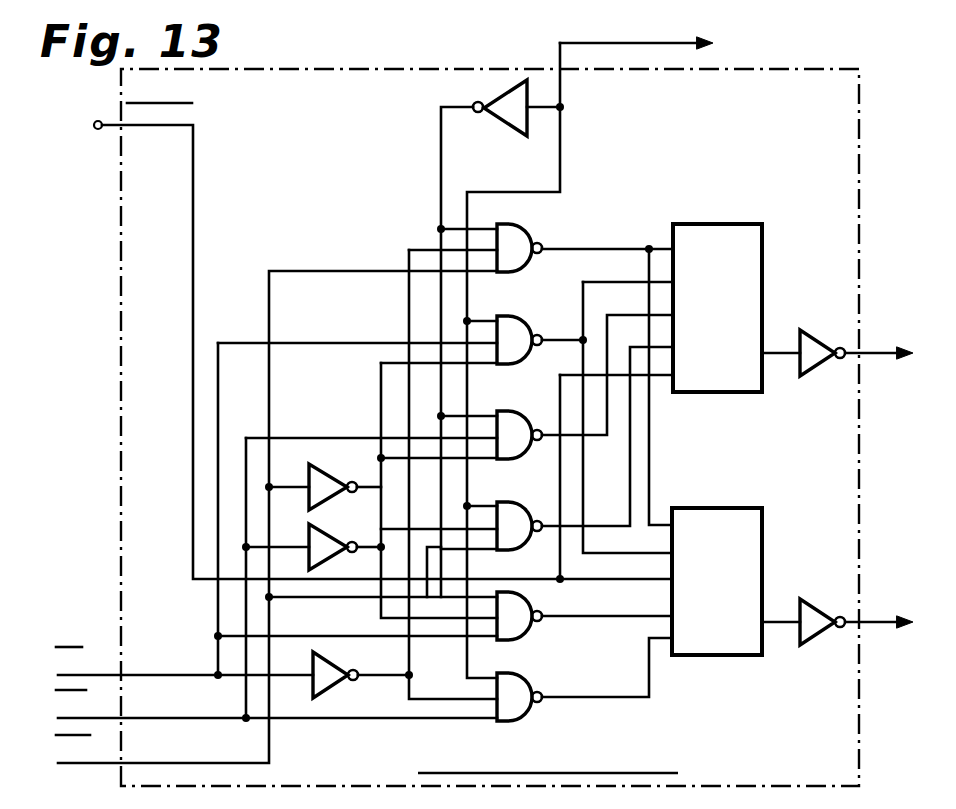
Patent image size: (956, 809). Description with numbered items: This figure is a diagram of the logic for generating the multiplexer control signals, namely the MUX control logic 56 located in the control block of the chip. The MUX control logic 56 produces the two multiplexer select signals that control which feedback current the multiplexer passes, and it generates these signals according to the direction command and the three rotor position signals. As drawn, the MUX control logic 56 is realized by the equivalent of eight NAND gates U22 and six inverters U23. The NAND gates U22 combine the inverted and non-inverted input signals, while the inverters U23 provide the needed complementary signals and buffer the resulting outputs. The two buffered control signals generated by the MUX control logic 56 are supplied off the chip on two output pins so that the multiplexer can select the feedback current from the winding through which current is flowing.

The MUX control logic 56 is at (785, 69).
The NAND gates U22 is at (629, 461).
The inverters U23 is at (577, 395).